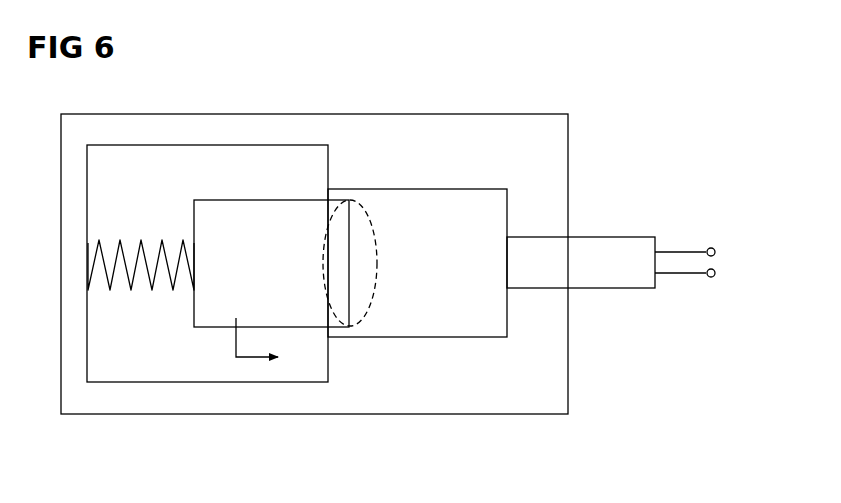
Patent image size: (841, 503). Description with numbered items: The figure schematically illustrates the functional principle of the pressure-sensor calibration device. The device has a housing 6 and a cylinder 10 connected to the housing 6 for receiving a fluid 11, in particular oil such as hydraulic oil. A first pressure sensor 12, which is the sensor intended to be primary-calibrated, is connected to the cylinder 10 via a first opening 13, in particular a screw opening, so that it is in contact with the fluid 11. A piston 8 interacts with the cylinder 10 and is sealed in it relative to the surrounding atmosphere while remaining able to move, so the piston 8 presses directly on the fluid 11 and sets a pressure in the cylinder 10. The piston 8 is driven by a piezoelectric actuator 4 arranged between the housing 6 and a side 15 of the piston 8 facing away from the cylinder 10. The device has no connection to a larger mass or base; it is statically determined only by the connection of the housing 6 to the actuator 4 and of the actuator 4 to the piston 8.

The piezoelectric actuator 4 is at (100, 292).
The housing 6 is at (525, 114).
The piston 8 is at (244, 145).
The cylinder 10 is at (362, 190).
The fluid 11 is at (445, 287).
The first pressure sensor 12 is at (627, 237).
The first opening 13 is at (545, 235).
The side of the piston facing away from the cylinder 15 is at (193, 311).